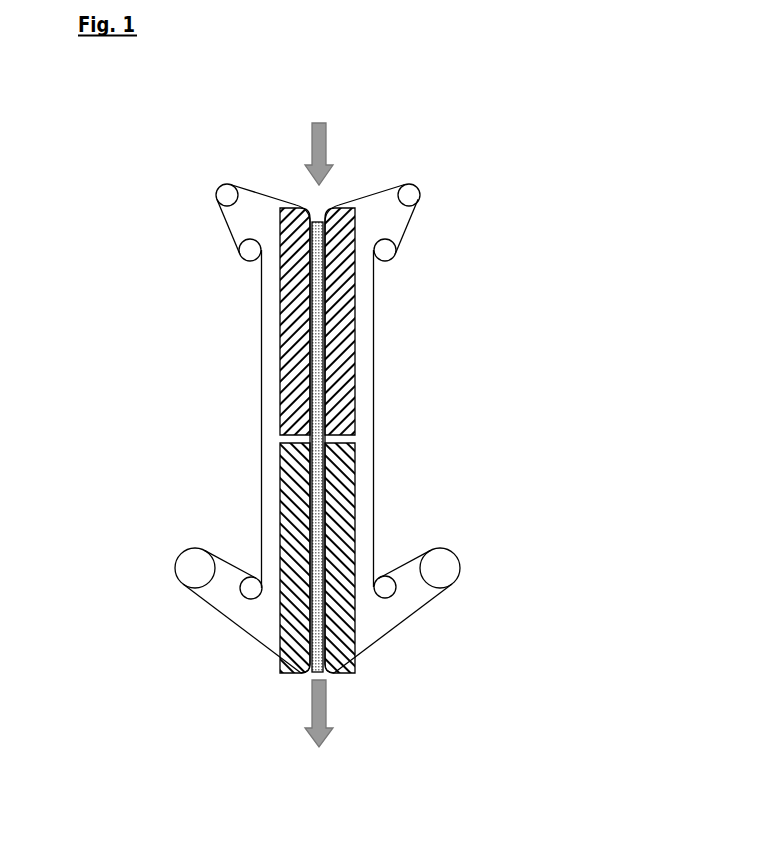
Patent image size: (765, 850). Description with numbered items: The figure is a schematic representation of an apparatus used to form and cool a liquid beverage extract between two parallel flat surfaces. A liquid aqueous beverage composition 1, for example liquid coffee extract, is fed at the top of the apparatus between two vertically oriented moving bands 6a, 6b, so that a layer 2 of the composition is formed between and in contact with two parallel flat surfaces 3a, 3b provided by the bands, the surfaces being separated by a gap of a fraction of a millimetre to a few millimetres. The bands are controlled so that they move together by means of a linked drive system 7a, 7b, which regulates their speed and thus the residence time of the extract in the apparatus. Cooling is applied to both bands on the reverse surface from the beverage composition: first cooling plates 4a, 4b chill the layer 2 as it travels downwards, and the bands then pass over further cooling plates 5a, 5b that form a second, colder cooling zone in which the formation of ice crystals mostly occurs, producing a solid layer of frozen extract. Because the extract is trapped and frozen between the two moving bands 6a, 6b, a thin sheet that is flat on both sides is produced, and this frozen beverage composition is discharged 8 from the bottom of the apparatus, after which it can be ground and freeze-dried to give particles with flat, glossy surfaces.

The liquid aqueous beverage composition 1 is at (328, 142).
The layer of liquid aqueous beverage composition 2 is at (322, 298).
The parallel flat surface 3a is at (303, 353).
The parallel flat surface 3b is at (328, 355).
The cooling plate 4a is at (282, 410).
The cooling plate 4b is at (357, 410).
The further cooling plate 5a is at (282, 490).
The further cooling plate 5b is at (357, 493).
The moving band 6a is at (220, 621).
The moving band 6b is at (408, 623).
The linked drive system 7a is at (173, 554).
The linked drive system 7b is at (458, 550).
The discharge of frozen beverage composition 8 is at (306, 710).